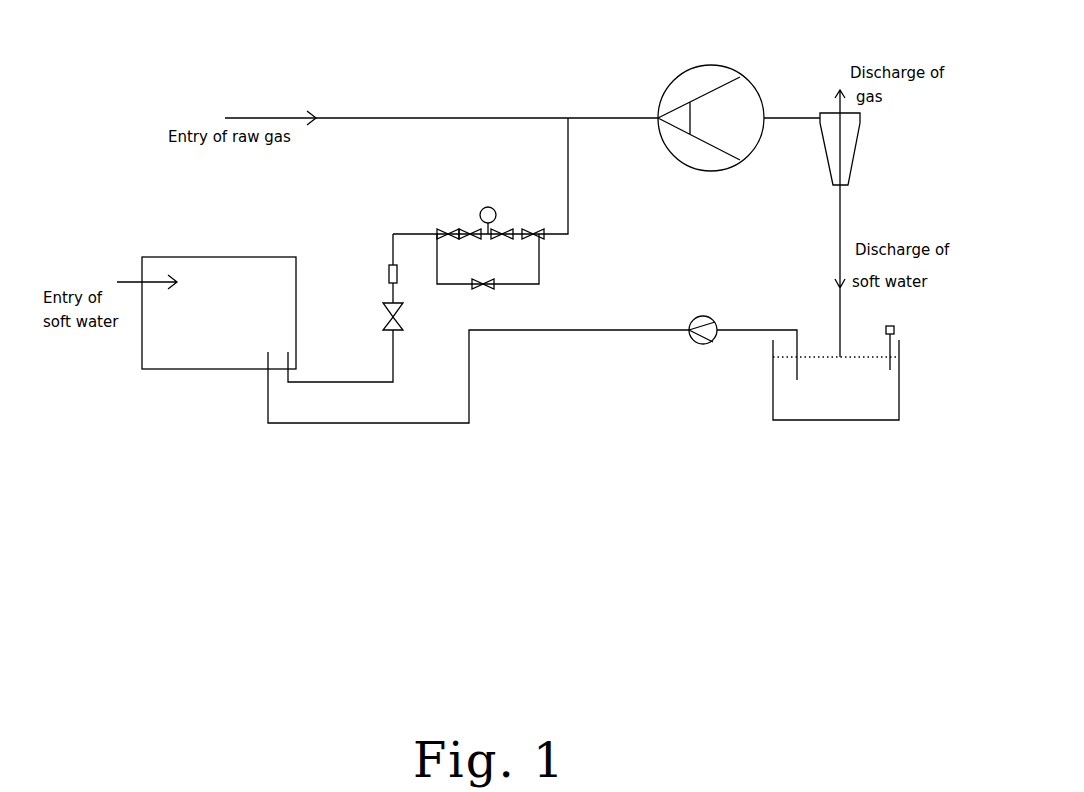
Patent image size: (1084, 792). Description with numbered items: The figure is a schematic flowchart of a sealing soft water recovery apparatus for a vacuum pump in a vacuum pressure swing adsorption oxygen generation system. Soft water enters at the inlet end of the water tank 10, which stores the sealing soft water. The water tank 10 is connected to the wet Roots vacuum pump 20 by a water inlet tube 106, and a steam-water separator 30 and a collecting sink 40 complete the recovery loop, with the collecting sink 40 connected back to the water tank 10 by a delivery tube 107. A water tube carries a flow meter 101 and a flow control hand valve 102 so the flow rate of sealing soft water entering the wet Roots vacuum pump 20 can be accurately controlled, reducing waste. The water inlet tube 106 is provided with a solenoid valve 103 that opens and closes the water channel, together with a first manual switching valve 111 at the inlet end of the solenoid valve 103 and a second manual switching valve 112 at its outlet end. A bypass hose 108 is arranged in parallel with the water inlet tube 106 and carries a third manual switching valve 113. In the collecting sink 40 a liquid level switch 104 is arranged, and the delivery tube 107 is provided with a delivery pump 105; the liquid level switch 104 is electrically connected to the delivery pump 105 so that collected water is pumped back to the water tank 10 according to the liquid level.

The water tank 10 is at (205, 352).
The wet Roots vacuum pump 20 is at (701, 67).
The steam-water separator 30 is at (825, 148).
The collecting sink 40 is at (773, 398).
The flow meter 101 is at (389, 278).
The flow control hand valve 102 is at (385, 310).
The solenoid valve 103 is at (482, 232).
The liquid level switch 104 is at (890, 325).
The delivery pump 105 is at (700, 316).
The water inlet tube 106 is at (568, 236).
The delivery tube 107 is at (573, 332).
The bypass hose 108 is at (525, 285).
The first manual switching valve 111 is at (445, 232).
The second manual switching valve 112 is at (522, 232).
The third manual switching valve 113 is at (478, 288).